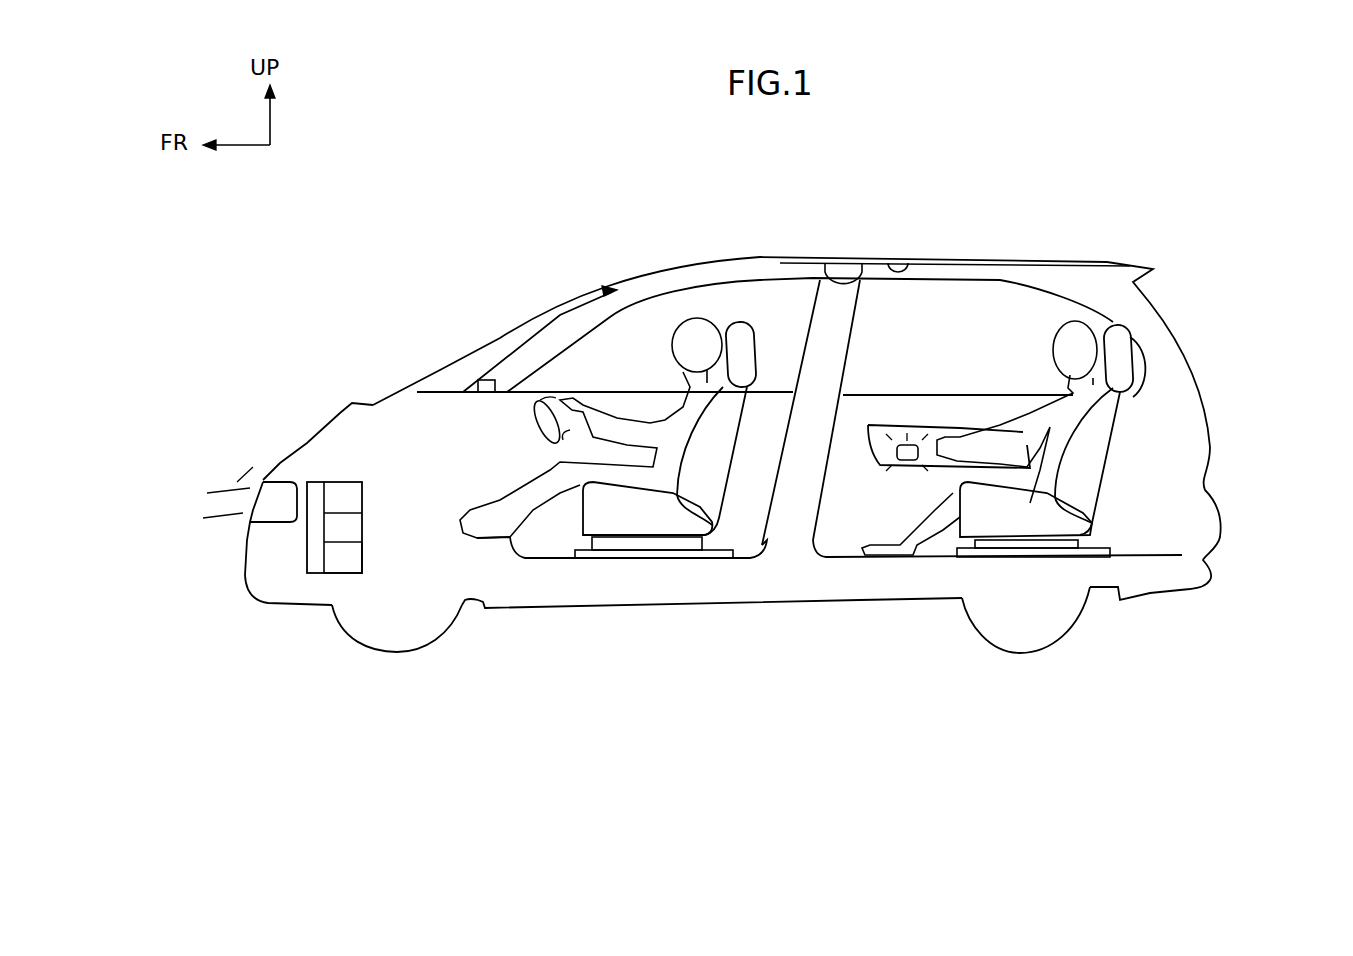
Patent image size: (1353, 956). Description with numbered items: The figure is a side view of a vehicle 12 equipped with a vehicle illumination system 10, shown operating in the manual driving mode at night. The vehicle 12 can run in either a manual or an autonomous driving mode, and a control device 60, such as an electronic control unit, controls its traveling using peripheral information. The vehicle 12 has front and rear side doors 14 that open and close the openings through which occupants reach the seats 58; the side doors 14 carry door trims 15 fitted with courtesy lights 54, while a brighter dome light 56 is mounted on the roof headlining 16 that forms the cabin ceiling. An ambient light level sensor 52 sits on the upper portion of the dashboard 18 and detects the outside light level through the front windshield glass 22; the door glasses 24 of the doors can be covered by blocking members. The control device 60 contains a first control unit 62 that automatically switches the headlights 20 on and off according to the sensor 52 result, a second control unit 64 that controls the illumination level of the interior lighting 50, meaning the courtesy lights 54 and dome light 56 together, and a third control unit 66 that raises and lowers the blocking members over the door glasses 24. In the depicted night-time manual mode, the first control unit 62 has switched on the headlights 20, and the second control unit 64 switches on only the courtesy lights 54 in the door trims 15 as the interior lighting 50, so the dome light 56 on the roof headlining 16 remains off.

The vehicle illumination system 10 is at (883, 300).
The vehicle 12 is at (996, 259).
The side doors 14 is at (833, 538).
The door trims 15 is at (970, 407).
The roof headlining 16 is at (905, 263).
The dashboard 18 is at (512, 415).
The headlights 20 is at (278, 493).
The front windshield glass 22 is at (507, 325).
The door glasses 24 is at (635, 323).
The interior lighting 50 is at (927, 410).
The ambient light level sensor 52 is at (485, 380).
The courtesy lights 54 is at (897, 462).
The dome light 56 is at (867, 263).
The seats 58 is at (745, 320).
The control device 60 is at (338, 567).
The first control unit 62 is at (355, 500).
The second control unit 64 is at (357, 530).
The third control unit 66 is at (308, 572).